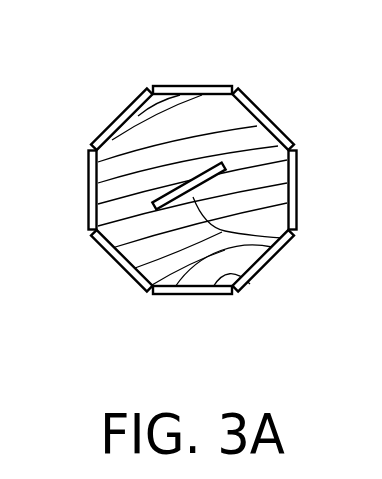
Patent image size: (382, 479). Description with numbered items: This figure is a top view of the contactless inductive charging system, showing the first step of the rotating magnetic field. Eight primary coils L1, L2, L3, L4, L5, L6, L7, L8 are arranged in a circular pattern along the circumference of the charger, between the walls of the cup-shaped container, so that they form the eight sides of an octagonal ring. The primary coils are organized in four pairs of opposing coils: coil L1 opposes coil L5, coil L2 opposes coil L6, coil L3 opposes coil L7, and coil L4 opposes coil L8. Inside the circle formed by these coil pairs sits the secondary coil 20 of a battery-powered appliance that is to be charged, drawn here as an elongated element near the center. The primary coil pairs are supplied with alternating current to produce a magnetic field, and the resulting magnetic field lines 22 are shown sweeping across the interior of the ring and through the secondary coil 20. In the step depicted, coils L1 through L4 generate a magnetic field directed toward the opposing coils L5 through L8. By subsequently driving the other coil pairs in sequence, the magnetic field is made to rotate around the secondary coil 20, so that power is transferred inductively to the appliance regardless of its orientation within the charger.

The secondary coil 20 is at (191, 190).
The magnetic field lines 22 is at (150, 135).
The primary coil L1 is at (193, 297).
The primary coil L2 is at (115, 268).
The primary coil L3 is at (85, 190).
The primary coil L4 is at (118, 115).
The primary coil L5 is at (192, 85).
The primary coil L6 is at (267, 113).
The primary coil L7 is at (300, 190).
The primary coil L8 is at (270, 272).